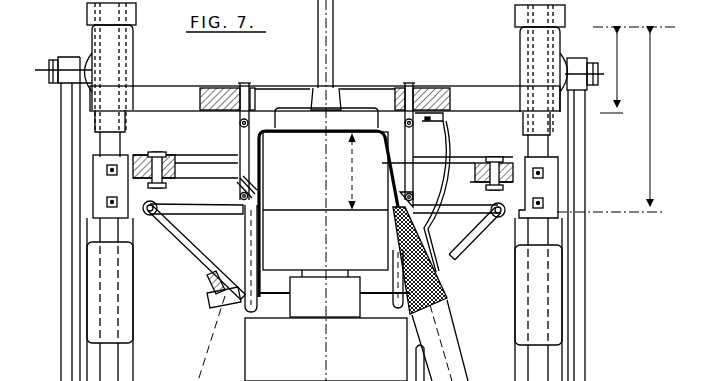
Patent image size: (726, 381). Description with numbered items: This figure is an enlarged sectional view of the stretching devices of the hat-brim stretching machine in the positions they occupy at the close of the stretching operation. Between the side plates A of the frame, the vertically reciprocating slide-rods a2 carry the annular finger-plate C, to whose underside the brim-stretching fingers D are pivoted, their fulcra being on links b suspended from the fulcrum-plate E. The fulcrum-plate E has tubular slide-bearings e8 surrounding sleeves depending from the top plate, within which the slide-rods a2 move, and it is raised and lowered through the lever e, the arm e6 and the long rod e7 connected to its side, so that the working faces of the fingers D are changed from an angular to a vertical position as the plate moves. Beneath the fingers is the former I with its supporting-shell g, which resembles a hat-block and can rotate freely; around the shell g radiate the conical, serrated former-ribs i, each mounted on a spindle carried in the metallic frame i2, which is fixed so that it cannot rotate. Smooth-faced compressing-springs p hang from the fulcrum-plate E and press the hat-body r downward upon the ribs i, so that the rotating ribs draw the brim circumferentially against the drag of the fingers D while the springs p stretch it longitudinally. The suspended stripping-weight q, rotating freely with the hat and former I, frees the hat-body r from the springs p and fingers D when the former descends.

The side plate A is at (326, 192).
The slide-rod a2 is at (590, 228).
The long rod e7 is at (66, 219).
The lever or arm e6 is at (576, 304).
The tubular slide-bearing e8 is at (319, 72).
The fulcrum-plate E is at (370, 82).
The link b is at (324, 142).
The stripping-weight q is at (326, 118).
The supporting-shell g is at (328, 214).
The hat-body r is at (438, 286).
The former I is at (327, 322).
The annular finger-plate C is at (323, 167).
The compressing-spring p is at (445, 142).
The brim-stretching finger D is at (324, 246).
The lever e is at (320, 244).
The former-rib i is at (207, 291).
The metallic frame i2 is at (440, 340).